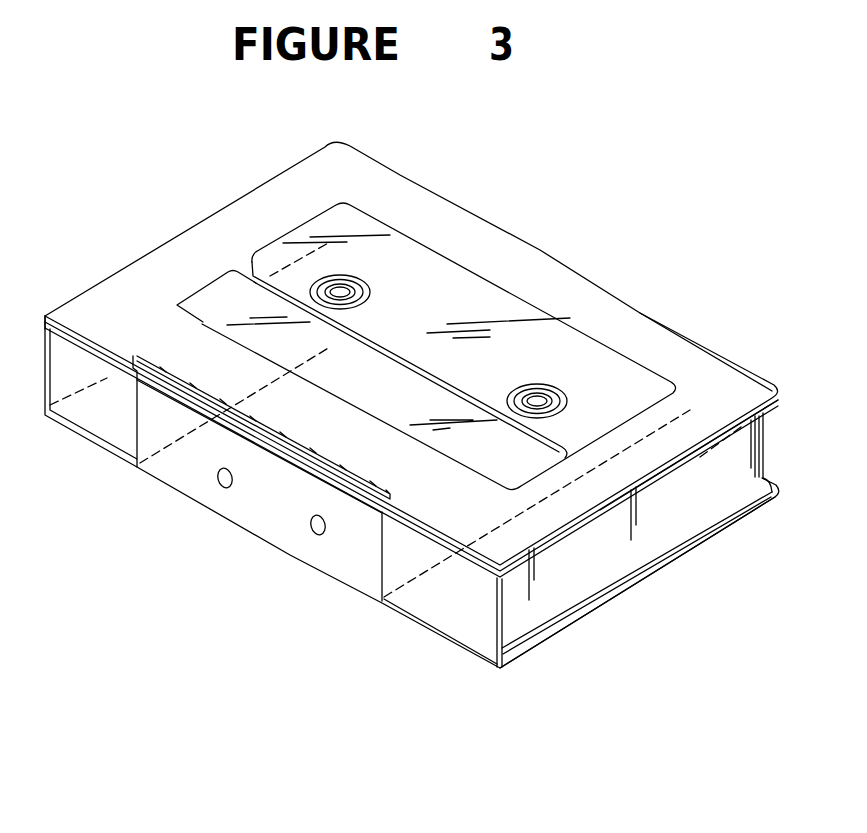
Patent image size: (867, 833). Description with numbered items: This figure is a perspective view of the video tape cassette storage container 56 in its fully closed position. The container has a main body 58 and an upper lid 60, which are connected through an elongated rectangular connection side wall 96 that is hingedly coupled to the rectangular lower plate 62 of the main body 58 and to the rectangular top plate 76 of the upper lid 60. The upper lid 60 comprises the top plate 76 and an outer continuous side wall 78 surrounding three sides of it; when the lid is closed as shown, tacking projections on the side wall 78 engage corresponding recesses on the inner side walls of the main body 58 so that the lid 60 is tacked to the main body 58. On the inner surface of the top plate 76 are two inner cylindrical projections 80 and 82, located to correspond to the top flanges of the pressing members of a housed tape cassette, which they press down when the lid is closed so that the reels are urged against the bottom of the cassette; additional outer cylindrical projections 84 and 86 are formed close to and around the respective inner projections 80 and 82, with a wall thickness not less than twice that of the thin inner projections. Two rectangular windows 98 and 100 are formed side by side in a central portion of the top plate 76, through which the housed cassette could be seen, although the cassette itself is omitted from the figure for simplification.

The video tape cassette storage container 56 is at (79, 273).
The main body 58 is at (743, 533).
The upper lid 60 is at (572, 262).
The lower plate 62 is at (597, 600).
The top plate 76 is at (737, 360).
The outer continuous side wall 78 is at (677, 507).
The inner cylindrical projection 80 is at (537, 400).
The inner cylindrical projection 82 is at (340, 290).
The outer cylindrical projection 84 is at (564, 399).
The outer cylindrical projection 86 is at (370, 292).
The connection side wall 96 is at (257, 507).
The rectangular window 98 is at (205, 302).
The rectangular window 100 is at (298, 240).